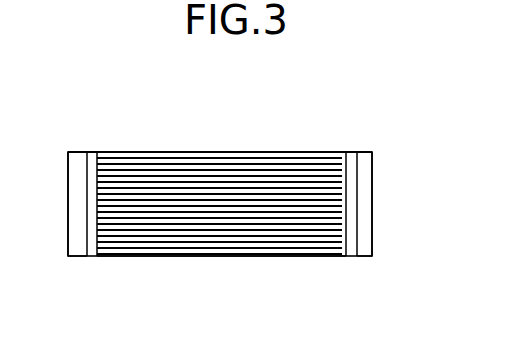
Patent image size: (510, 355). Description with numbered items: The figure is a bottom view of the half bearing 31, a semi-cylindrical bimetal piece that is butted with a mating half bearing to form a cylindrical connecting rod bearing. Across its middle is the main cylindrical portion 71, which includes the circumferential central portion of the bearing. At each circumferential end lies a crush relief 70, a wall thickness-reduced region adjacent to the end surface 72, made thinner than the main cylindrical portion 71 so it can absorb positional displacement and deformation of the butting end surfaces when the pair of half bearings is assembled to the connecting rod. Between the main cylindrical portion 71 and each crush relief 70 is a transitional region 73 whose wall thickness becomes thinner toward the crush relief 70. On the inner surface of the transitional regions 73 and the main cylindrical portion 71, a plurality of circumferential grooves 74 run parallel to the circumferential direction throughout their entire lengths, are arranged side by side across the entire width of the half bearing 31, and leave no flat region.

The half bearing 31 is at (248, 118).
The crush relief 70 is at (92, 257).
The main cylindrical portion 71 is at (218, 257).
The end surface 72 is at (77, 257).
The transitional region 73 is at (103, 151).
The circumferential groove 74 is at (345, 187).